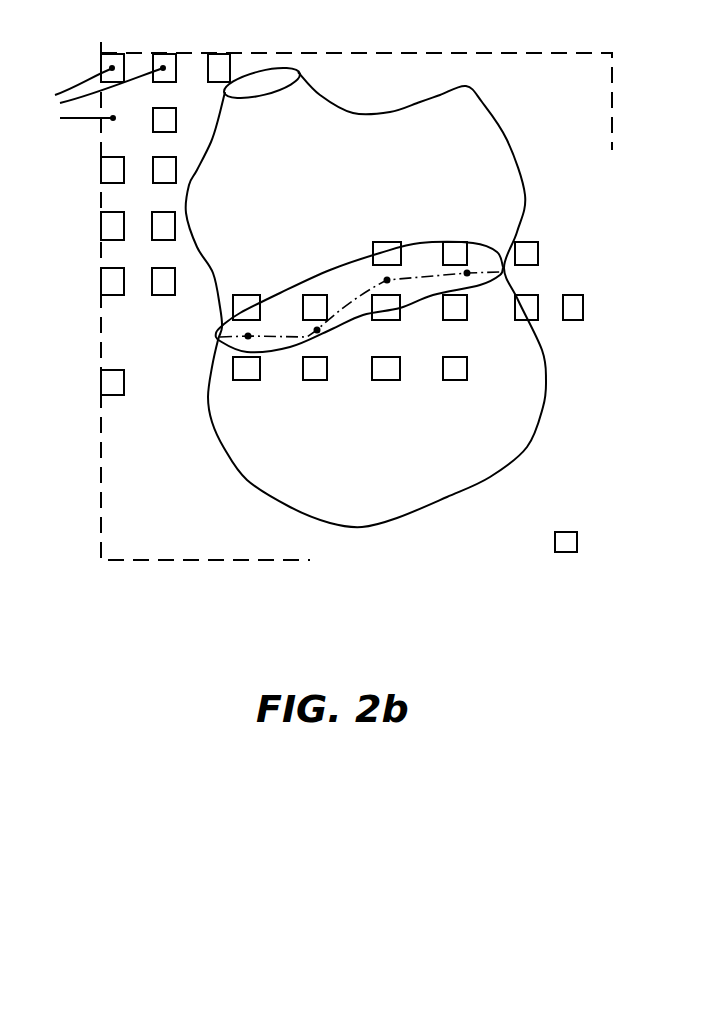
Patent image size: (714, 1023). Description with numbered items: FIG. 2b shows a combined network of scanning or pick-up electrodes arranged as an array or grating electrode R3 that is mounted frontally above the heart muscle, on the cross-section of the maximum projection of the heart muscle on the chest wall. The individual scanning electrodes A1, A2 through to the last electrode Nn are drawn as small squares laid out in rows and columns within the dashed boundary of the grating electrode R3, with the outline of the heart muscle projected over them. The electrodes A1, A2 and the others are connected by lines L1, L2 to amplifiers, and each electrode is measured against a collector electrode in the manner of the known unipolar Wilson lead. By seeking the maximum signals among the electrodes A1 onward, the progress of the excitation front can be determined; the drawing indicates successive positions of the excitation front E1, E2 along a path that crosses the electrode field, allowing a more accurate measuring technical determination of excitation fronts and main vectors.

The scanning electrode A1 is at (112, 55).
The scanning electrode A2 is at (163, 55).
The line L1 is at (60, 94).
The line L2 is at (73, 117).
The array or grating electrode R3 is at (547, 57).
The excitation front E1 is at (248, 336).
The excitation front E2 is at (317, 330).
The scanning electrode Nn is at (567, 552).